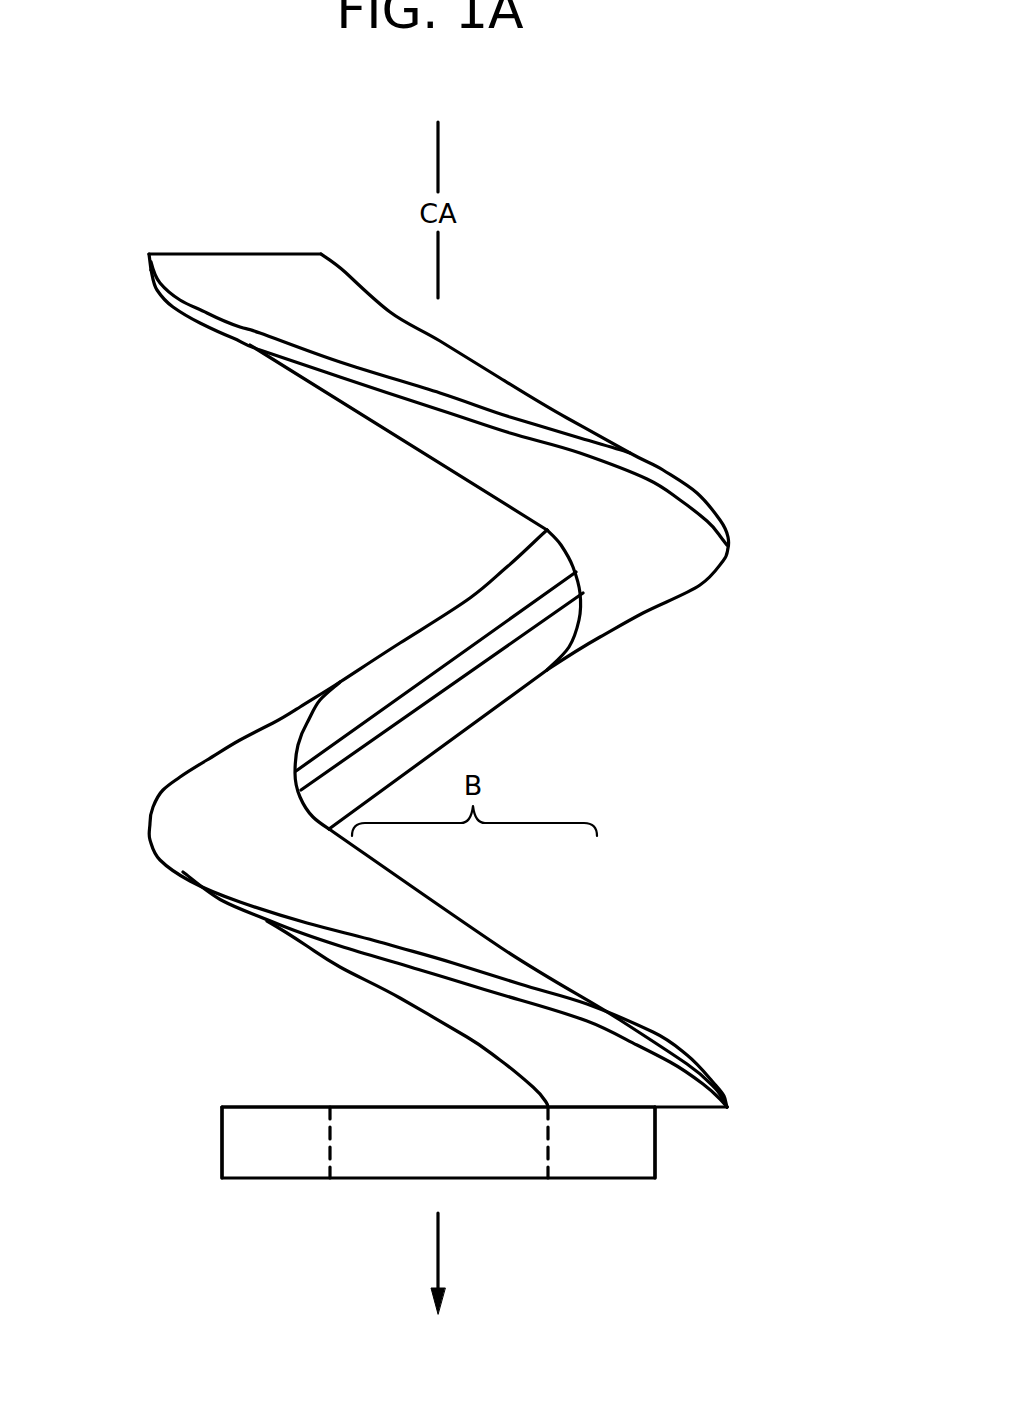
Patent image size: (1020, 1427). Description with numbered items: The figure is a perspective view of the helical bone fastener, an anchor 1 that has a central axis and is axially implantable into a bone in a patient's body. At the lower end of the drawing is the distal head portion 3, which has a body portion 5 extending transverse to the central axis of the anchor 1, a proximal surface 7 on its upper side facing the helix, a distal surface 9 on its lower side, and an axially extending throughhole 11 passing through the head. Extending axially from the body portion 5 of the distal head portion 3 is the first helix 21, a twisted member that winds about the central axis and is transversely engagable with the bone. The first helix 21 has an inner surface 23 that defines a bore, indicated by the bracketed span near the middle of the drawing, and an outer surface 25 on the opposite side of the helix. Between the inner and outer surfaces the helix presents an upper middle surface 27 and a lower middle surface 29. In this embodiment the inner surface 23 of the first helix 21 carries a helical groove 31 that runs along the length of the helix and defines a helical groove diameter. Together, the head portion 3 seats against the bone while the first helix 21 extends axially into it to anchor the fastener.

The anchor 1 is at (656, 330).
The distal head portion 3 is at (680, 1148).
The body portion 5 is at (498, 1153).
The proximal surface 7 is at (298, 1106).
The distal surface 9 is at (280, 1180).
The axially extending throughhole 11 is at (408, 1153).
The first helix 21 is at (637, 587).
The inner surface 23 is at (473, 690).
The outer surface 25 is at (193, 878).
The upper middle surface 27 is at (172, 798).
The lower middle surface 29 is at (440, 438).
The helical groove 31 is at (434, 685).